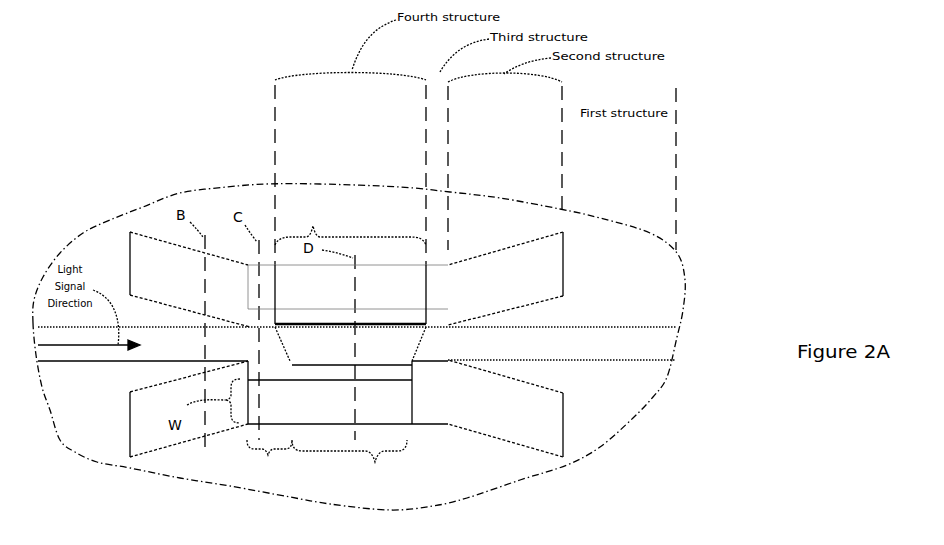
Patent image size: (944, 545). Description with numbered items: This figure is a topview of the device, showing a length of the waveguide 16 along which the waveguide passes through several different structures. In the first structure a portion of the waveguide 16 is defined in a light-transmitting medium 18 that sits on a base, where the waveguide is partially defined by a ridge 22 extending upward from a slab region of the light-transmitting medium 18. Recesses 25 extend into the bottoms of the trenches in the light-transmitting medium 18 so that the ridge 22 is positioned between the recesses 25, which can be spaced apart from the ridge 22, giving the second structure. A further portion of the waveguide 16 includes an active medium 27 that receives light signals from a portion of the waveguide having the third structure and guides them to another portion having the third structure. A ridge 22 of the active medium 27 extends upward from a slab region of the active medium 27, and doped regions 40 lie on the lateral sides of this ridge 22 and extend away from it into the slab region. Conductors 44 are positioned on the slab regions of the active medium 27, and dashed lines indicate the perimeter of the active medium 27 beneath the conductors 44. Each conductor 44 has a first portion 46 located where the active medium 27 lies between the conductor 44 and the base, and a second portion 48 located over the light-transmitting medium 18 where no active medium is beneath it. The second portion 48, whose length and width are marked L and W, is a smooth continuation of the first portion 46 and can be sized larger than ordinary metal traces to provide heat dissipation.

The waveguide 16 is at (603, 318).
The light-transmitting medium 18 is at (506, 263).
The ridge 22 is at (93, 364).
The recesses 25 is at (138, 232).
The active medium 27 is at (350, 223).
The doped regions 40 is at (262, 327).
The conductors 44 is at (412, 293).
The first portion 46 is at (349, 465).
The second portion 48 is at (269, 463).